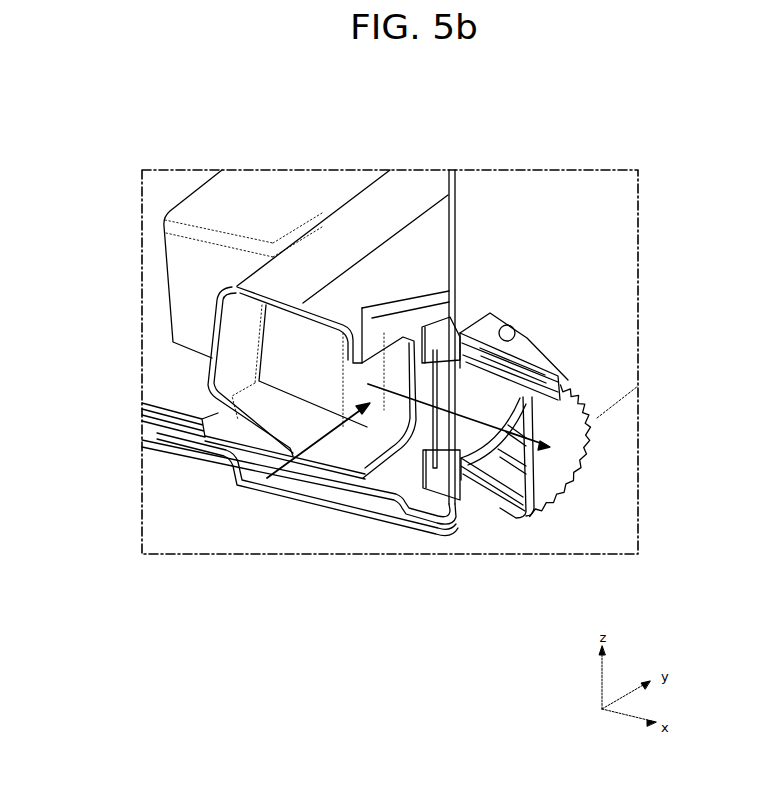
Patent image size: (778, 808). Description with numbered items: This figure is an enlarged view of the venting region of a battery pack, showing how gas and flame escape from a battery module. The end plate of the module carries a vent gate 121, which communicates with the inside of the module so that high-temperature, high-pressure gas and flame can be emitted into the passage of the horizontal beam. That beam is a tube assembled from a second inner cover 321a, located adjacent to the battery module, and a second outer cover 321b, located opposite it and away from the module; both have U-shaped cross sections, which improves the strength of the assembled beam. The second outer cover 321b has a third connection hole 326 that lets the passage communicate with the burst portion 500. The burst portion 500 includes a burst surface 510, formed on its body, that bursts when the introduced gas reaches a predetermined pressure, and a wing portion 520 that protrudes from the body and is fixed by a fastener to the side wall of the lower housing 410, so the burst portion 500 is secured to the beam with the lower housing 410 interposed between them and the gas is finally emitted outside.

The vent gate 121 is at (260, 196).
The second inner cover 321a is at (217, 340).
The second outer cover 321b is at (402, 212).
The third connection hole 326 is at (390, 445).
The lower housing 410 is at (514, 212).
The burst portion 500 is at (516, 517).
The burst surface 510 is at (430, 470).
The wing portion 520 is at (527, 340).